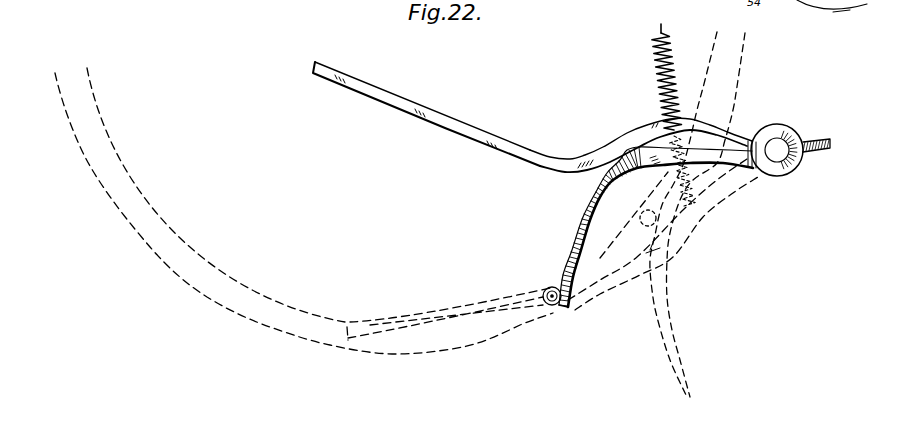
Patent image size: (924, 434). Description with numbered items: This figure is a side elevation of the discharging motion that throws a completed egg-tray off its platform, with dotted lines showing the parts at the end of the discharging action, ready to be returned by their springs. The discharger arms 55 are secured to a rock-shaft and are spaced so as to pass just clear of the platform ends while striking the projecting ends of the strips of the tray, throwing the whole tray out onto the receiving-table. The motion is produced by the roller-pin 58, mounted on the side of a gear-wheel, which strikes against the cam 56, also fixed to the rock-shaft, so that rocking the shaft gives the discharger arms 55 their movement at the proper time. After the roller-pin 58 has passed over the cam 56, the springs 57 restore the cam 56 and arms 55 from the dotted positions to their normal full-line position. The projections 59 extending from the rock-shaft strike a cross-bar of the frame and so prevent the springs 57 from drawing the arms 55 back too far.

The discharger arms 55 is at (438, 116).
The cam 56 is at (621, 178).
The springs 57 is at (640, 79).
The roller-pin 58 is at (549, 288).
The projections 59 is at (818, 152).